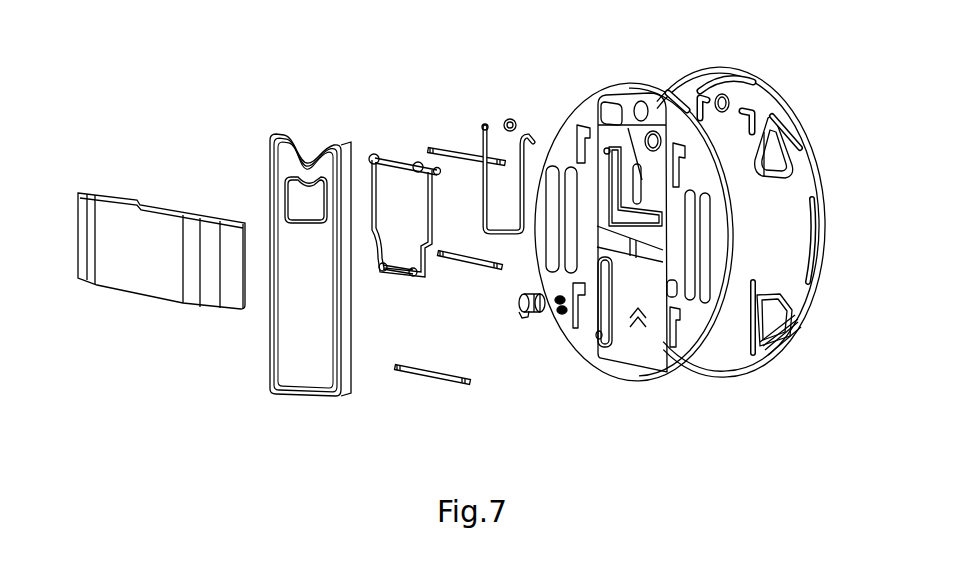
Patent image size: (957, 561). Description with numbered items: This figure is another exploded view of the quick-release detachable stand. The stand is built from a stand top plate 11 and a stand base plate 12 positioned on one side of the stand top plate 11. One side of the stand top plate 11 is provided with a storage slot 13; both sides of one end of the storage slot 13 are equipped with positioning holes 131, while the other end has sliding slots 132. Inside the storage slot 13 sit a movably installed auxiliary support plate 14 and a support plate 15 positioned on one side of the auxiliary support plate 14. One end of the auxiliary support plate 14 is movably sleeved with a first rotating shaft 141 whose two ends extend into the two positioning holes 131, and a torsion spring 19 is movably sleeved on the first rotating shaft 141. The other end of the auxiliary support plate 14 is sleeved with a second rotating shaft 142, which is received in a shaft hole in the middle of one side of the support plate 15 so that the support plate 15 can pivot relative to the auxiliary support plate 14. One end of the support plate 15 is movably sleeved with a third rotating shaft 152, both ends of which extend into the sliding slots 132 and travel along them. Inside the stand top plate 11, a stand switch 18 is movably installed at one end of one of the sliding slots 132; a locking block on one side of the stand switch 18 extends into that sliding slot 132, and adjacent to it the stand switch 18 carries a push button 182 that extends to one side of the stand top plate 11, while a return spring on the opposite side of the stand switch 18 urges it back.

The stand top plate 11 is at (702, 175).
The stand base plate 12 is at (797, 188).
The storage slot 13 is at (633, 340).
The positioning holes 131 is at (600, 123).
The sliding slots 132 is at (597, 328).
The auxiliary support plate 14 is at (396, 196).
The first rotating shaft 141 is at (452, 147).
The second rotating shaft 142 is at (462, 268).
The support plate 15 is at (318, 288).
The third rotating shaft 152 is at (465, 383).
The stand switch 18 is at (525, 320).
The push button 182 is at (510, 303).
The torsion spring 19 is at (520, 155).